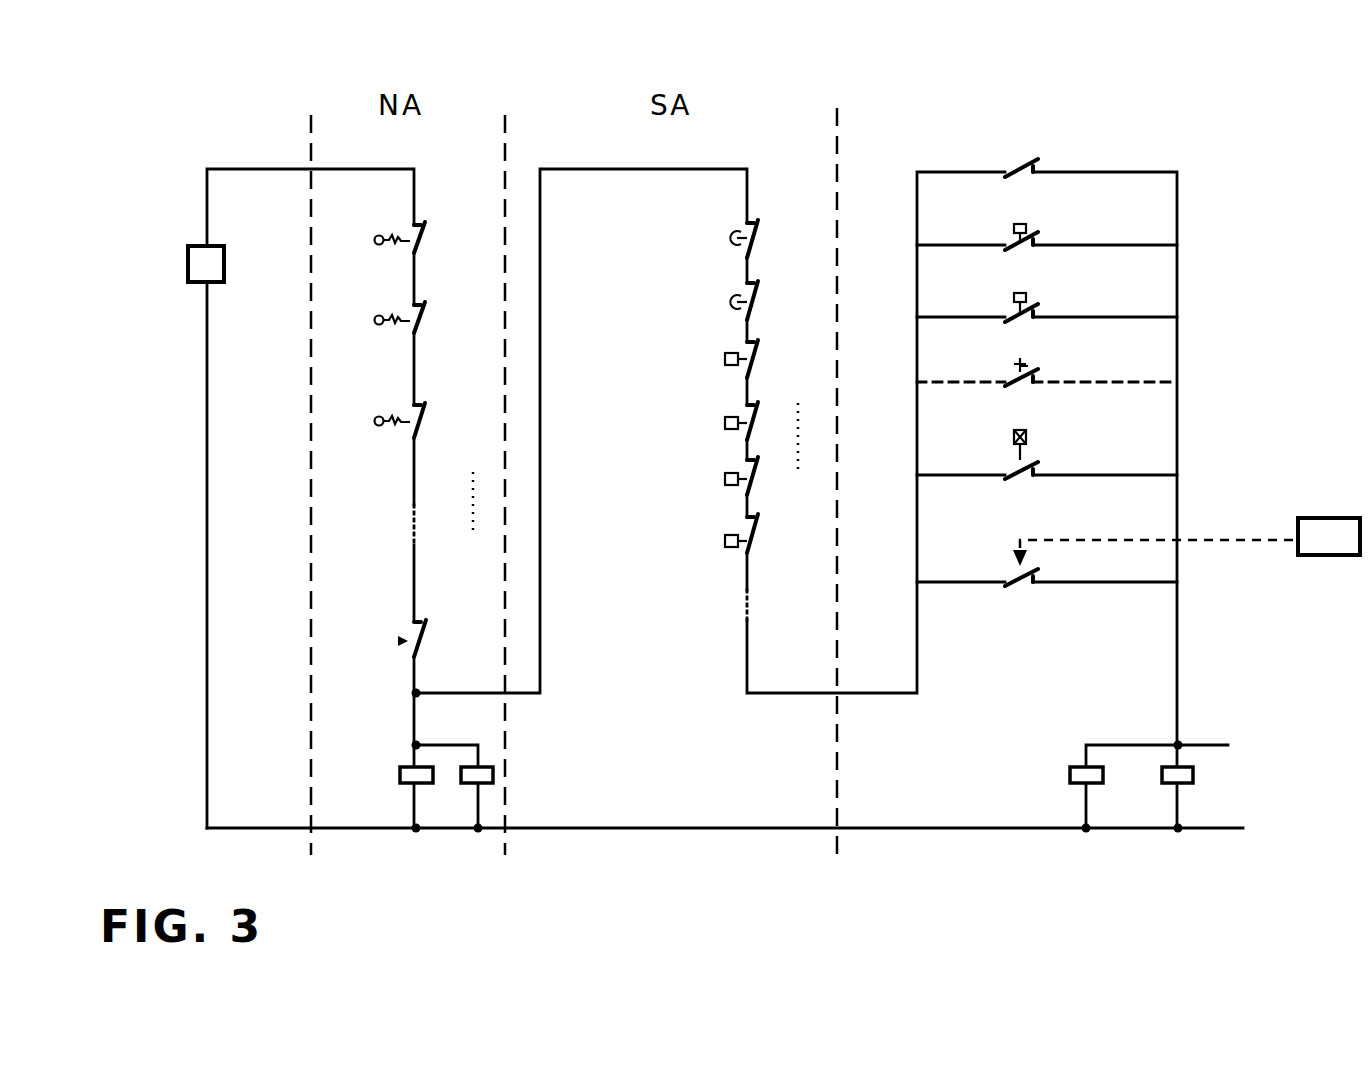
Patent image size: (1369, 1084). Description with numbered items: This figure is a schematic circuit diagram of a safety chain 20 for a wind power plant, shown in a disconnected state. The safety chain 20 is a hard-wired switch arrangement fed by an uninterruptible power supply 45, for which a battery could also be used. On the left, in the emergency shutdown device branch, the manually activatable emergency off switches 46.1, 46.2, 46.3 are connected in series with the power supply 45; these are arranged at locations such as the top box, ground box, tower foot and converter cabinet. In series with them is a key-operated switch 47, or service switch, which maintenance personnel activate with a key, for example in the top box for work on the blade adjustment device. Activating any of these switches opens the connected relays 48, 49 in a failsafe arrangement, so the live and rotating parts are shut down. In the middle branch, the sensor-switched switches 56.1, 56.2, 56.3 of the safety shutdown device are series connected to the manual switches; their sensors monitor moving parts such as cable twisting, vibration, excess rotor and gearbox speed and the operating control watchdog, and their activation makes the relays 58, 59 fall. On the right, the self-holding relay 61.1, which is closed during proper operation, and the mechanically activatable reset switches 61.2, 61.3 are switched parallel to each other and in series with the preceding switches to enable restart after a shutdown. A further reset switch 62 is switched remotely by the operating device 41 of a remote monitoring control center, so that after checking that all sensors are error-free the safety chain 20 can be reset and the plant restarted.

The safety chain 20 is at (90, 224).
The operating device 41 is at (1325, 551).
The uninterruptible power supply 45 is at (187, 262).
The manual switch 46.1 is at (418, 252).
The manual switch 46.2 is at (418, 332).
The manual switch 46.3 is at (418, 436).
The key-operated switch 47 is at (418, 652).
The relay 48 is at (414, 767).
The relay 49 is at (482, 770).
The sensor-switched switch 56.1 is at (752, 252).
The sensor-switched switch 56.2 is at (753, 315).
The sensor-switched switch 56.3 is at (753, 373).
The relay 58 is at (1082, 768).
The relay 59 is at (1190, 772).
The self-holding relay 61.1 is at (1007, 168).
The reset switch 61.2 is at (1010, 244).
The reset switch 61.3 is at (1010, 315).
The reset switch 62 is at (1017, 578).